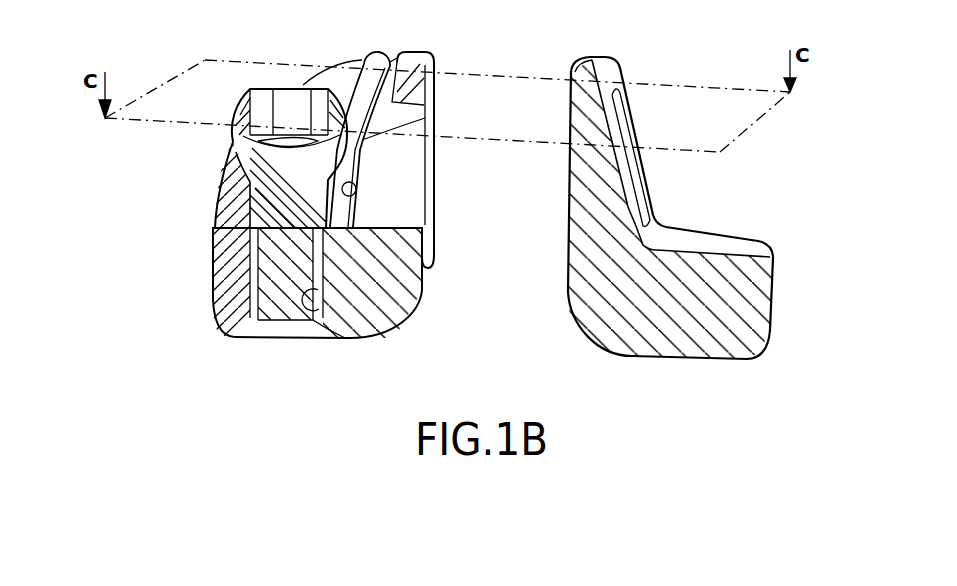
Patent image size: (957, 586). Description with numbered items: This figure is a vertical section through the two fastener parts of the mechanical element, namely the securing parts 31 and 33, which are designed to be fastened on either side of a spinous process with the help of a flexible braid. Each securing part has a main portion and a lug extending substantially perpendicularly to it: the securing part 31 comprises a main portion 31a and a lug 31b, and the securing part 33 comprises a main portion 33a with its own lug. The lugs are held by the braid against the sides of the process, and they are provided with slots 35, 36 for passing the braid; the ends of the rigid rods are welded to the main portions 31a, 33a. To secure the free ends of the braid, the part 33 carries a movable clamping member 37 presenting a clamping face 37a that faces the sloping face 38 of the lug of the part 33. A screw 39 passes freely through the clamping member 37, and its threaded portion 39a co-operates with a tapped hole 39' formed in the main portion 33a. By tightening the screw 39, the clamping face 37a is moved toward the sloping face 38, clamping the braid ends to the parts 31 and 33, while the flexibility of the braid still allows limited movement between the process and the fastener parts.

The securing part 31 is at (705, 185).
The main portion 31a is at (753, 303).
The lug 31b is at (608, 80).
The securing part 33 is at (446, 63).
The main portion 33a is at (373, 302).
The slot 35 is at (622, 140).
The slot 36 is at (360, 133).
The clamping member 37 is at (372, 80).
The clamping face 37a is at (365, 155).
The sloping face 38 is at (356, 188).
The screw 39 is at (280, 107).
The threaded portion 39a is at (275, 281).
The tapped hole 39' is at (333, 330).